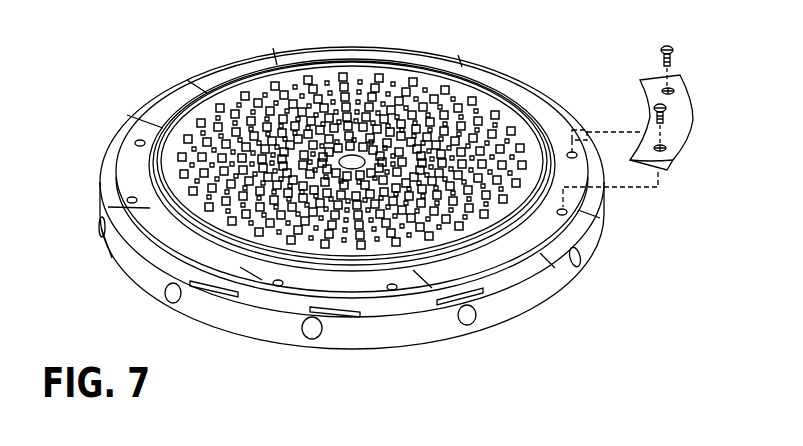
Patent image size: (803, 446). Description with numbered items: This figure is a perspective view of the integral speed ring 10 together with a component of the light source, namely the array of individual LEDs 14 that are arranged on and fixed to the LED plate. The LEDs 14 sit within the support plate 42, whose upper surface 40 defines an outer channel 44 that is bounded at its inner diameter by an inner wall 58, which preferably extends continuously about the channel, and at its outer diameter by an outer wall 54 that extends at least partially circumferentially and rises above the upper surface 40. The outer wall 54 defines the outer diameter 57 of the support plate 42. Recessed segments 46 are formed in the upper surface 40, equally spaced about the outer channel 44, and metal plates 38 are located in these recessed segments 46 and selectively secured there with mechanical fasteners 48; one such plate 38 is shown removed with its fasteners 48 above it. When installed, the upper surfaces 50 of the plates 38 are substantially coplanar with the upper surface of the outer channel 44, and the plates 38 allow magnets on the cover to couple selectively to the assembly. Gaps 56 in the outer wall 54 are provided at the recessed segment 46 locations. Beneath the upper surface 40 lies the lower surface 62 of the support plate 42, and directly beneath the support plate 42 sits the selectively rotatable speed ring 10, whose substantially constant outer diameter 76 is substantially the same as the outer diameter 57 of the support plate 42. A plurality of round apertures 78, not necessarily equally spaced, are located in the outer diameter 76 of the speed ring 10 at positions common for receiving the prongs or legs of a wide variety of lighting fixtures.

The speed ring 10 is at (600, 237).
The LEDs 14 is at (378, 70).
The metal plates 38 is at (692, 112).
The upper surface 40 is at (530, 100).
The support plate 42 is at (452, 70).
The outer channel 44 is at (156, 112).
The recessed segments 46 is at (120, 163).
The mechanical fasteners 48 is at (671, 44).
The upper surfaces 50 is at (687, 103).
The outer wall 54 is at (513, 272).
The gaps 56 is at (342, 62).
The outer diameter 57 is at (162, 262).
The inner wall 58 is at (453, 245).
The lower surface 62 is at (264, 307).
The outer diameter 76 is at (110, 258).
The apertures 78 is at (165, 298).